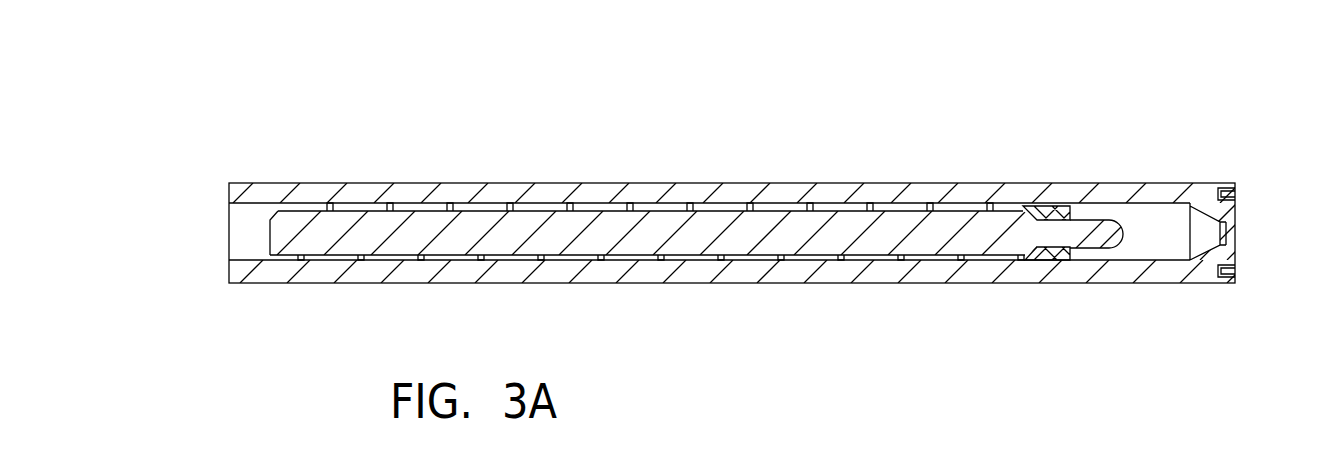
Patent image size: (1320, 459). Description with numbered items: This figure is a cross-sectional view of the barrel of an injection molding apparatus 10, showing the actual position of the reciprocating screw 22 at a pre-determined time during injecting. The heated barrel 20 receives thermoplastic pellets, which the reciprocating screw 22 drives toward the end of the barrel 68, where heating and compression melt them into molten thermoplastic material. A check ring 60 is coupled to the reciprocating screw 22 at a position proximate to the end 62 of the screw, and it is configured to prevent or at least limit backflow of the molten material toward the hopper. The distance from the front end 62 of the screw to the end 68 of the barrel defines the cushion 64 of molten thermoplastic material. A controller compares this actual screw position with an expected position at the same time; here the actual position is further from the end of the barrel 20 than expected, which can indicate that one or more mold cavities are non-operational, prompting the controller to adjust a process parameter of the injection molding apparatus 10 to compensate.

The injection molding apparatus 10 is at (959, 82).
The heated barrel 20 is at (840, 196).
The reciprocating screw 22 is at (922, 284).
The check ring 60 is at (1041, 205).
The end of the reciprocating screw 62 is at (1133, 233).
The cushion 64 is at (1138, 235).
The end of the barrel 68 is at (1237, 228).